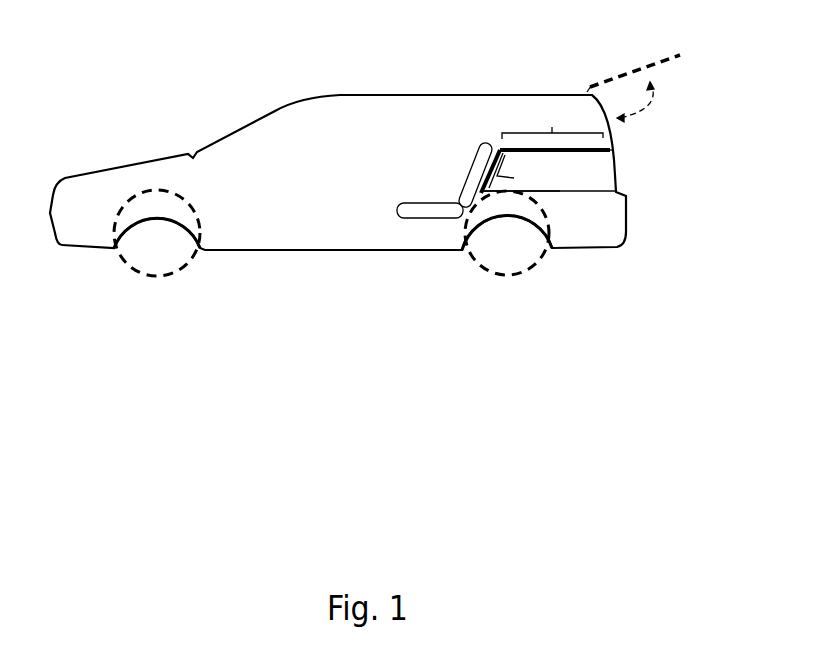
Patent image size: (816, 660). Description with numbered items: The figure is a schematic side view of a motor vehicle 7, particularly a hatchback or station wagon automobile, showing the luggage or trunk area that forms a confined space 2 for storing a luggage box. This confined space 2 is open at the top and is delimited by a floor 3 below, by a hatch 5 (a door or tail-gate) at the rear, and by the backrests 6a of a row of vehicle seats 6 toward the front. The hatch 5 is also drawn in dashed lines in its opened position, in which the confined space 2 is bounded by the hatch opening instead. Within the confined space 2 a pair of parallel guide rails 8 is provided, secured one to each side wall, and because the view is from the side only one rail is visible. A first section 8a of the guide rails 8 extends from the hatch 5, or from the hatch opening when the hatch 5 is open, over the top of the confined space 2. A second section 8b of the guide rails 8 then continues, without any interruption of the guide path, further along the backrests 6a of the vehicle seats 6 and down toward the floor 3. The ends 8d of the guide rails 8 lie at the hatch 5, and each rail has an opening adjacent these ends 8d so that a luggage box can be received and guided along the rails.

The confined space 2 is at (578, 184).
The floor 3 is at (571, 193).
The hatch 5 is at (607, 131).
The vehicle seats 6 is at (447, 132).
The backrests 6a is at (478, 178).
The motor vehicle 7 is at (375, 76).
The guide rails 8 is at (598, 157).
The first section 8a is at (552, 122).
The second section 8b is at (516, 172).
The ends 8d is at (612, 155).